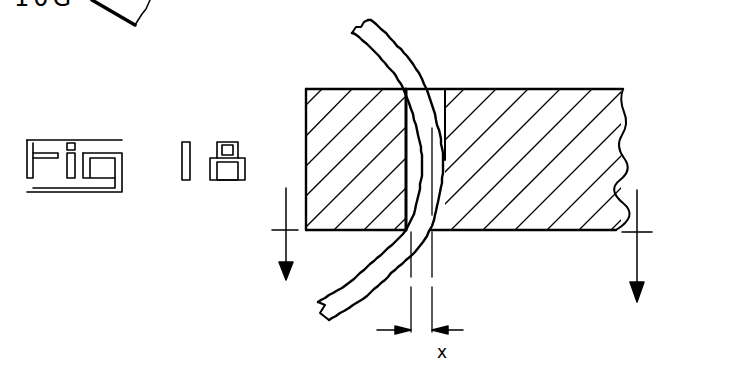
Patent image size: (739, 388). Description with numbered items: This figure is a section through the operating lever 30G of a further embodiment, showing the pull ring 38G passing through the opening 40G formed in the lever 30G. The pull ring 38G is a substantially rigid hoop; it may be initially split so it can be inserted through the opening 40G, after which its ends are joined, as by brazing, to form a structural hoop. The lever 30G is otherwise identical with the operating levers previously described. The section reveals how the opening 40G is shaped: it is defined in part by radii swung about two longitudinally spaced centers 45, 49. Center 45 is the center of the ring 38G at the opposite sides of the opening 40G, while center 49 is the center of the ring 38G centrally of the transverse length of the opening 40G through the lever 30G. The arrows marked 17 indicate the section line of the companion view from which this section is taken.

The lever 30G is at (515, 89).
The opening 40G is at (445, 105).
The pull ring 38G is at (397, 44).
The section line arrows 17 is at (462, 245).
The center 49 is at (432, 258).
The center 45 is at (411, 300).